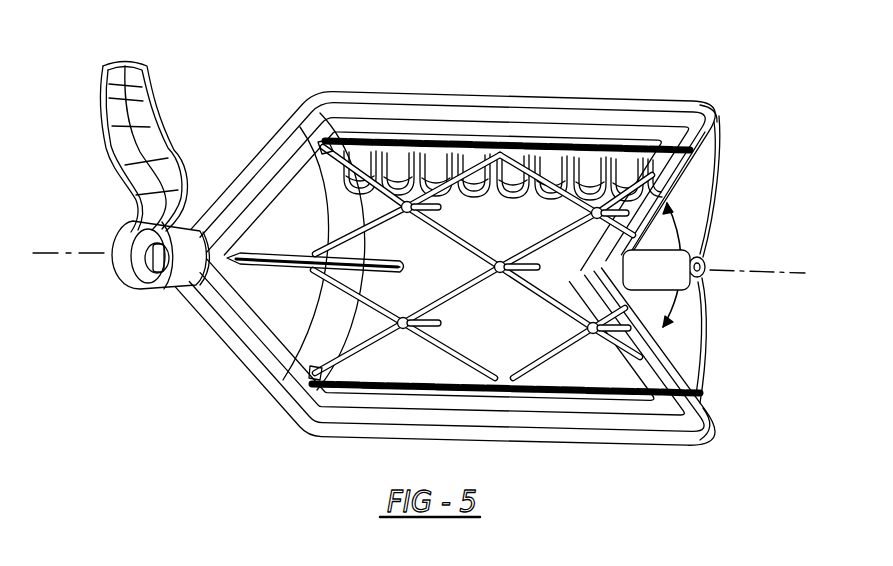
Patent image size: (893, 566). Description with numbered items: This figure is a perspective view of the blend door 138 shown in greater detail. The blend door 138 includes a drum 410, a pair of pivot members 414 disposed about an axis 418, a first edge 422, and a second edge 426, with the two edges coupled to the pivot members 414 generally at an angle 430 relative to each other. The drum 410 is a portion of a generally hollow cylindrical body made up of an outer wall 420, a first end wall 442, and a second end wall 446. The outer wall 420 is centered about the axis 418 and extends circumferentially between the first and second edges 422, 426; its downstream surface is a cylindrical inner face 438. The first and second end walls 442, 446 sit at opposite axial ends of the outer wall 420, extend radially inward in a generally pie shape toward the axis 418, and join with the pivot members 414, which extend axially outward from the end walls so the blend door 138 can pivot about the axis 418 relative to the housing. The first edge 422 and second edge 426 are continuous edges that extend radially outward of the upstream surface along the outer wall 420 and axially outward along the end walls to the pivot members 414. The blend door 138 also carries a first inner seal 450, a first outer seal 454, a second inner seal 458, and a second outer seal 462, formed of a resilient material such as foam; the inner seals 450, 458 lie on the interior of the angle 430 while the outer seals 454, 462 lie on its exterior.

The blend door 138 is at (161, 466).
The drum 410 is at (290, 317).
The pivot members 414 is at (157, 258).
The axis 418 is at (50, 252).
The outer wall 420 is at (543, 340).
The first edge 422 is at (713, 403).
The second edge 426 is at (697, 163).
The angle 430 is at (683, 300).
The cylindrical inner face 438 is at (513, 330).
The first end wall 442 is at (263, 287).
The second end wall 446 is at (693, 213).
The first inner seal 450 is at (700, 373).
The first outer seal 454 is at (682, 440).
The second inner seal 458 is at (700, 180).
The second outer seal 462 is at (693, 107).